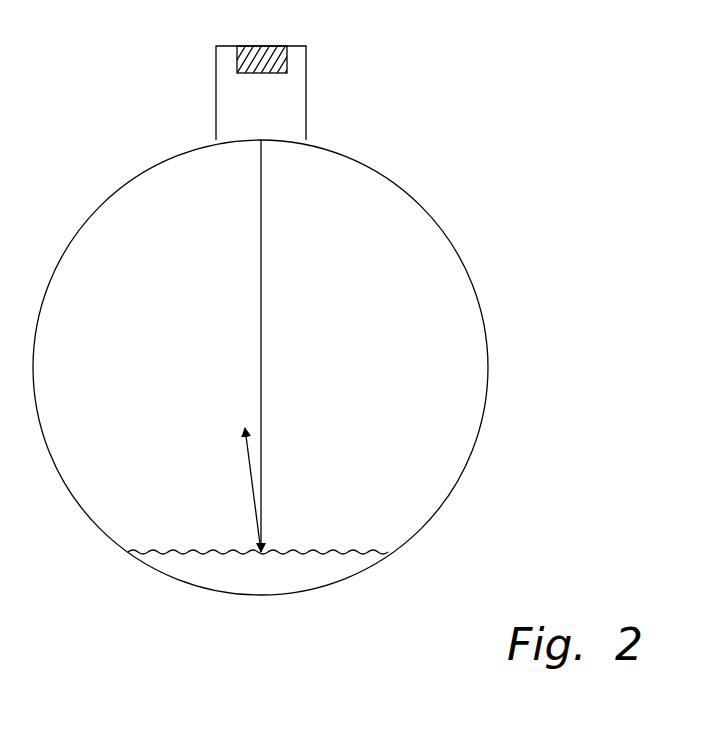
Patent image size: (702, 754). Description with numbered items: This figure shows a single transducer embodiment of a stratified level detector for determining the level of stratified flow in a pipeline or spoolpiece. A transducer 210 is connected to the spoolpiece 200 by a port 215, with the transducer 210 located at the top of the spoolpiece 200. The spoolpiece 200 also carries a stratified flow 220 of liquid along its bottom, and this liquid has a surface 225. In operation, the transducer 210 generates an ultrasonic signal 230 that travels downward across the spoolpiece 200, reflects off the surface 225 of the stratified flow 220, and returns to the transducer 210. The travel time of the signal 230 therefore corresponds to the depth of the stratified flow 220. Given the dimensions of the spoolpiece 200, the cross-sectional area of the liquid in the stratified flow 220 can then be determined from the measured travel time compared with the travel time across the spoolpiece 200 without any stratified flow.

The spoolpiece 200 is at (382, 173).
The transducer 210 is at (258, 46).
The port 215 is at (306, 96).
The stratified flow 220 is at (267, 582).
The surface 225 is at (188, 550).
The signal 230 is at (261, 292).